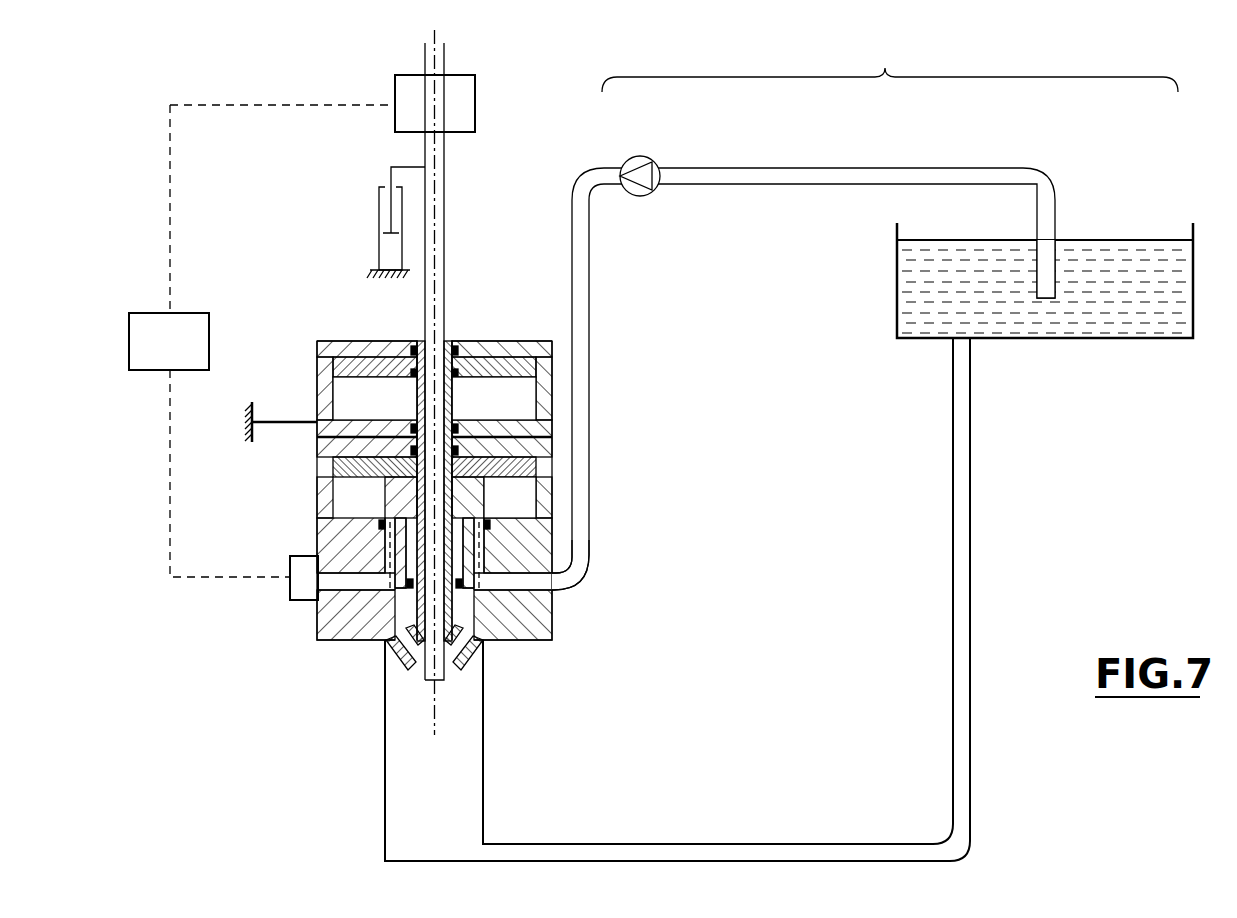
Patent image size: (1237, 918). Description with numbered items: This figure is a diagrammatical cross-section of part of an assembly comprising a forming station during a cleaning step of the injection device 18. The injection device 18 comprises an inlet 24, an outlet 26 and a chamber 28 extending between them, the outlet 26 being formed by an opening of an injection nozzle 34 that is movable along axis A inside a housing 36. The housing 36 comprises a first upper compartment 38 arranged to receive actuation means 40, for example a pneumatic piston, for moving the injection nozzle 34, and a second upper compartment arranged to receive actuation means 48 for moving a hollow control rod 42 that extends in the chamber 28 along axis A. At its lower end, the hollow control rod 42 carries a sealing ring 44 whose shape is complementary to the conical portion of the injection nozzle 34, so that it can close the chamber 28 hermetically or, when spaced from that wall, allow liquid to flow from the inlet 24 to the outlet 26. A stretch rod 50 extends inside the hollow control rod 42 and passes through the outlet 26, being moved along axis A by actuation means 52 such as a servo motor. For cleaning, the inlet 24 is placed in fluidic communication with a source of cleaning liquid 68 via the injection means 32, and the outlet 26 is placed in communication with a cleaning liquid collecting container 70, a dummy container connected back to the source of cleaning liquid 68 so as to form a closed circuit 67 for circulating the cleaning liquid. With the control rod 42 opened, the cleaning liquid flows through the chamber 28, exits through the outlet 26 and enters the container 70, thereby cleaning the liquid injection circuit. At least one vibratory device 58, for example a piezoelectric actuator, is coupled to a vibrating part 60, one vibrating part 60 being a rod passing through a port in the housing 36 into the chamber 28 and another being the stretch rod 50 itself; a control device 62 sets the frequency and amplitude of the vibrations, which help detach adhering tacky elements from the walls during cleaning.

The injection device 18 is at (325, 507).
The inlet 24 is at (533, 583).
The outlet 26 is at (415, 668).
The chamber 28 is at (405, 612).
The injection means 32 is at (640, 156).
The injection nozzle 34 is at (388, 640).
The housing 36 is at (325, 465).
The first upper compartment 38 is at (515, 497).
The actuation means 40 is at (533, 453).
The hollow control rod 42 is at (487, 630).
The sealing ring 44 is at (340, 390).
The actuation means 48 is at (363, 370).
The stretch rod 50 is at (438, 174).
The actuation means 52 is at (388, 253).
The vibratory device 58 is at (403, 84).
The vibrating part 60 is at (438, 260).
The control device 62 is at (129, 338).
The fluid circuit 67 is at (855, 325).
The source of cleaning liquid 68 is at (1128, 330).
The cleaning liquid collecting container 70 is at (395, 758).
The axis A is at (437, 63).